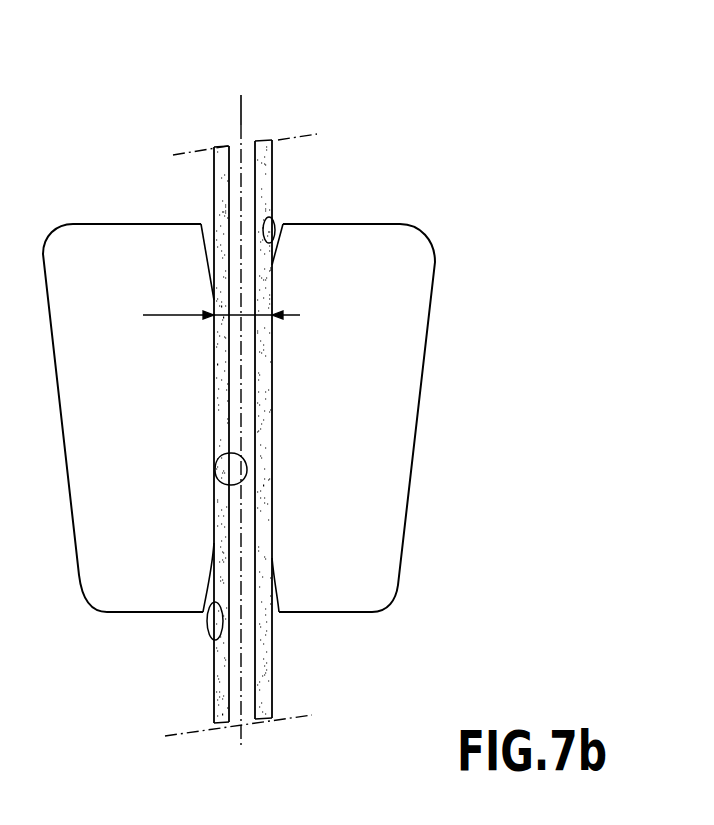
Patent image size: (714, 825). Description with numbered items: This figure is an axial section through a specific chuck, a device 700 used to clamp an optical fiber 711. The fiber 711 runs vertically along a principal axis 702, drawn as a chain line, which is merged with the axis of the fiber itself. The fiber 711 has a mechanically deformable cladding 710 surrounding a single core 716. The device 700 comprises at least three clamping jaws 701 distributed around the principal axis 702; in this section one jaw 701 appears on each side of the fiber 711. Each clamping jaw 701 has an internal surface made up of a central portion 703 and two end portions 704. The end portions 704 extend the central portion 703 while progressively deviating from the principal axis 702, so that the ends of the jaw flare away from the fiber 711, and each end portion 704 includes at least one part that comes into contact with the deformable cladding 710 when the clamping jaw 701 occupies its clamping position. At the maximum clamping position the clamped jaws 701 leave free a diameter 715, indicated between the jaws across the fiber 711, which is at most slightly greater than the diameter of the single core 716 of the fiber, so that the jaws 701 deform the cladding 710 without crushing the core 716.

The device 700 is at (462, 218).
The clamping jaw 701 is at (400, 396).
The principal axis 702 is at (242, 108).
The central portion 703 is at (215, 478).
The end portion 704 is at (271, 218).
The mechanically deformable cladding 710 is at (263, 636).
The fiber 711 is at (278, 681).
The diameter 715 is at (221, 303).
The single core 716 is at (248, 430).